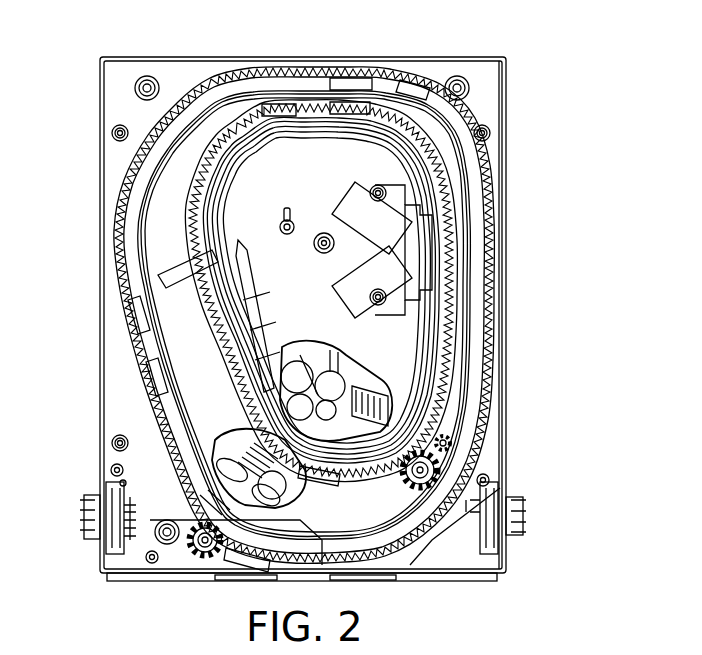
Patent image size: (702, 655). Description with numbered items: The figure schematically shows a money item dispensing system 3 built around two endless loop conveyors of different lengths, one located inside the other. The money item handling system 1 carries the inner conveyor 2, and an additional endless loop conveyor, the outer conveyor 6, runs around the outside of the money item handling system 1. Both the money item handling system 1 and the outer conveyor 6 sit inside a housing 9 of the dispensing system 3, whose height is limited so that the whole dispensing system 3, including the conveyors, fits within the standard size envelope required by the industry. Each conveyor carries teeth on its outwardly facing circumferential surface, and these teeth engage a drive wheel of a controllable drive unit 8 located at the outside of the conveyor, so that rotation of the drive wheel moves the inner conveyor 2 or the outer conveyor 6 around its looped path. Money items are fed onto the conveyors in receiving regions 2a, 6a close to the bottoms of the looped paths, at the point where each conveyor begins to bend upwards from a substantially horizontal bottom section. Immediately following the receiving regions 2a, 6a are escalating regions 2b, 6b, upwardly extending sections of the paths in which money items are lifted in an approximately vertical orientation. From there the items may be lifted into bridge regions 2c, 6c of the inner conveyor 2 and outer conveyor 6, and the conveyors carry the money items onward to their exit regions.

The money item handling system 1 is at (388, 336).
The inner conveyor 2 is at (185, 278).
The receiving region 2a is at (323, 478).
The escalating region 2b is at (147, 285).
The bridge region 2c is at (302, 96).
The money item dispensing system 3 is at (545, 165).
The outer conveyor 6 is at (140, 246).
The receiving region 6a is at (238, 545).
The escalating region 6b is at (122, 337).
The bridge region 6c is at (386, 60).
The drive unit 8 is at (193, 530).
The housing 9 is at (510, 350).